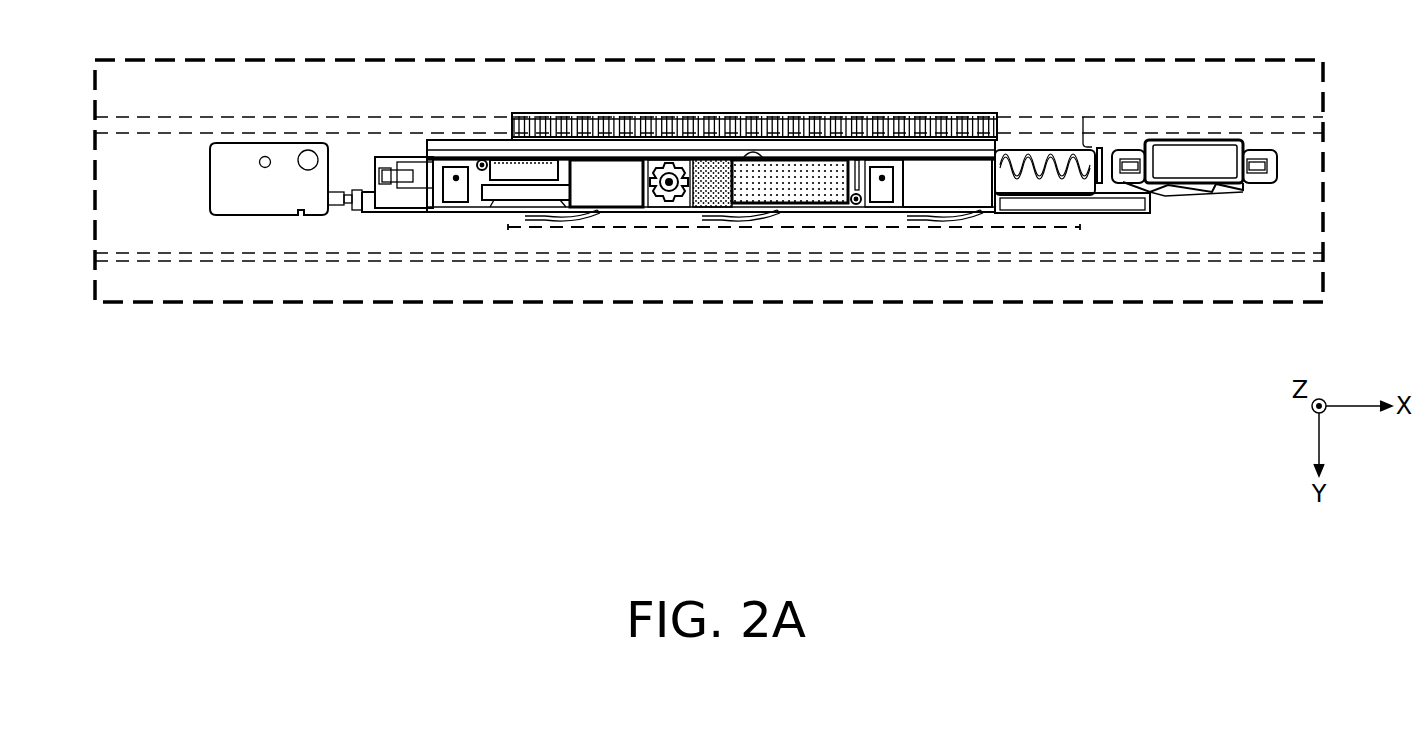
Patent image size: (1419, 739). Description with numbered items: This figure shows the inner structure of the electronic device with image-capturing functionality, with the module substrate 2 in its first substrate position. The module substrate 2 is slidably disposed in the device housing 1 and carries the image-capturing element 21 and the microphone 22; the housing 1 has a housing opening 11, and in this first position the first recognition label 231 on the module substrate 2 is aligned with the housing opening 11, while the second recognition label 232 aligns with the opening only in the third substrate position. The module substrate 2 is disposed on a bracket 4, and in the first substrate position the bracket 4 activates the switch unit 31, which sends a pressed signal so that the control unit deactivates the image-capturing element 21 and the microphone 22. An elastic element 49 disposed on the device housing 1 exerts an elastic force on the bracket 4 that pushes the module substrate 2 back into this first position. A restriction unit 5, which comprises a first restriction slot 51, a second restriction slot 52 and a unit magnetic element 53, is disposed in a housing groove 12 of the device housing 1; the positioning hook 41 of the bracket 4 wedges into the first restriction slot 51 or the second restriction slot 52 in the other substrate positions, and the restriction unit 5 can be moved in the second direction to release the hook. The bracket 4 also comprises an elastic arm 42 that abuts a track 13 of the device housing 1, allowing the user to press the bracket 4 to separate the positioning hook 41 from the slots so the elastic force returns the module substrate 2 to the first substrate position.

The device housing 1 is at (118, 122).
The housing opening 11 is at (806, 152).
The housing groove 12 is at (1278, 165).
The track 13 is at (612, 230).
The module substrate 2 is at (478, 202).
The image-capturing element 21 is at (664, 208).
The microphone 22 is at (882, 203).
The first recognition label 231 is at (803, 206).
The second recognition label 232 is at (713, 208).
The switch unit 31 is at (262, 195).
The bracket 4 is at (407, 212).
The positioning hook 41 is at (1130, 213).
The elastic arm 42 is at (545, 218).
The elastic element 49 is at (1042, 150).
The restriction unit 5 is at (1178, 180).
The first restriction slot 51 is at (1187, 194).
The second restriction slot 52 is at (1218, 194).
The unit magnetic element 53 is at (1220, 162).